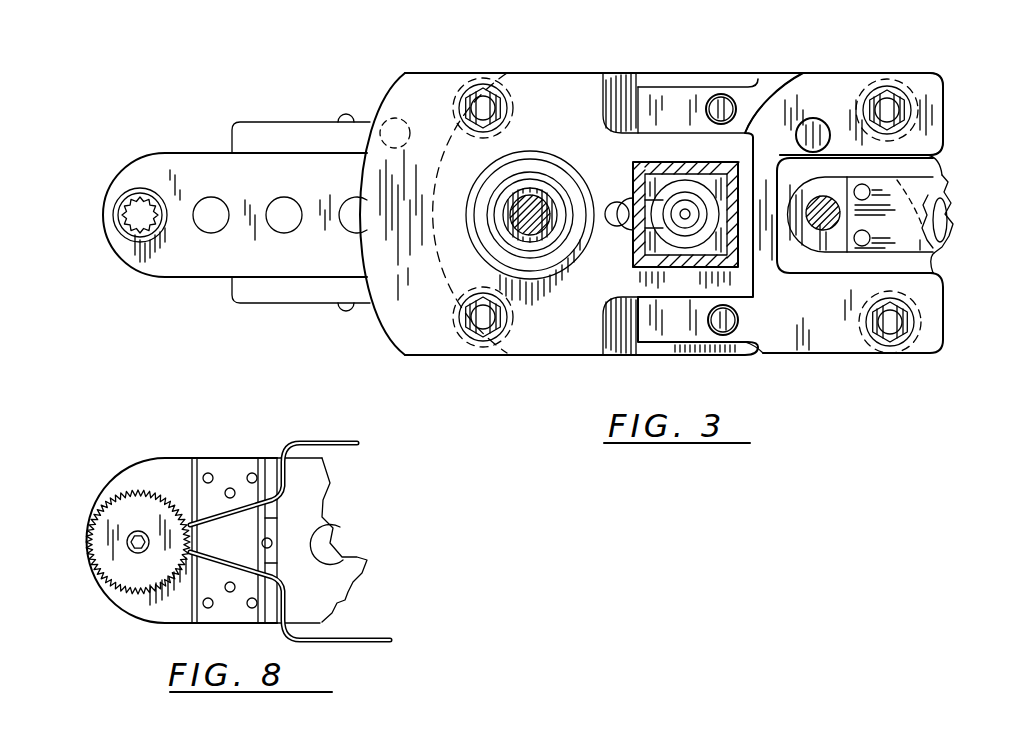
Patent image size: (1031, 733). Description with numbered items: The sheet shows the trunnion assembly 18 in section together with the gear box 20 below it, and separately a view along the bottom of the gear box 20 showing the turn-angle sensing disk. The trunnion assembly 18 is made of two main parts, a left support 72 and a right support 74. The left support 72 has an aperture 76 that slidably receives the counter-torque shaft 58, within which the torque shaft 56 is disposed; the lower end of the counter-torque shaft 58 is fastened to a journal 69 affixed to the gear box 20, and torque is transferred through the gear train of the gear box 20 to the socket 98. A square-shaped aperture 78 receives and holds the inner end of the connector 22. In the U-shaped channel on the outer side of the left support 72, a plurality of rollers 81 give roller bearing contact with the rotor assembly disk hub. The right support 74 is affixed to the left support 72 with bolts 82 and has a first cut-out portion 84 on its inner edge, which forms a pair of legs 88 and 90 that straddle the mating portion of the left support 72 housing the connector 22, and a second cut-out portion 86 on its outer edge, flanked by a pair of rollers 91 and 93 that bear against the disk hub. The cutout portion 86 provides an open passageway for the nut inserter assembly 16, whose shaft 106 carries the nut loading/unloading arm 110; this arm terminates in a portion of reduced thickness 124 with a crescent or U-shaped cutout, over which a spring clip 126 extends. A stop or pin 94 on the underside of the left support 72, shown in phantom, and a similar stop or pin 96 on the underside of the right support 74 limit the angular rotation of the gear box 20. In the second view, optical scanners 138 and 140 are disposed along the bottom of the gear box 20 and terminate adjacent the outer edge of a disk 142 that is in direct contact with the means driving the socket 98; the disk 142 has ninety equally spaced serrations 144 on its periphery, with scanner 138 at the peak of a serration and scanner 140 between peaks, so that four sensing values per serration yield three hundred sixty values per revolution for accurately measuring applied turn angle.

In FIG. 3, the nut inserter assembly 16 is at (945, 176).
In FIG. 3, the trunnion assembly 18 is at (948, 102).
In FIG. 3, the gear box 20 is at (268, 186).
In FIG. 8, the gear box 20 is at (177, 455).
In FIG. 3, the connector 22 is at (672, 268).
In FIG. 3, the torque shaft 56 is at (552, 210).
In FIG. 3, the counter-torque shaft 58 is at (550, 200).
In FIG. 3, the journal 69 is at (548, 247).
In FIG. 3, the left support 72 is at (610, 289).
In FIG. 3, the right support 74 is at (821, 307).
In FIG. 3, the aperture 76 is at (530, 195).
In FIG. 3, the square-shaped aperture 78 is at (690, 170).
In FIG. 3, the rollers 81 is at (506, 80).
In FIG. 3, the bolts 82 is at (710, 98).
In FIG. 3, the first cut-out portion 84 is at (806, 70).
In FIG. 3, the second cut-out portion 86 is at (937, 158).
In FIG. 3, the leg 88 is at (688, 92).
In FIG. 3, the leg 90 is at (684, 343).
In FIG. 3, the roller 91 is at (912, 86).
In FIG. 3, the roller 93 is at (913, 347).
In FIG. 3, the stop or pin 94 is at (385, 113).
In FIG. 3, the stop or pin 96 is at (825, 120).
In FIG. 3, the socket 98 is at (142, 193).
In FIG. 3, the shaft 106 is at (808, 245).
In FIG. 3, the nut loading/unloading arm 110 is at (827, 178).
In FIG. 3, the portion of reduced thickness 124 is at (948, 216).
In FIG. 3, the spring clip 126 is at (927, 251).
In FIG. 8, the optical scanner 138 is at (378, 638).
In FIG. 8, the optical scanner 140 is at (350, 447).
In FIG. 8, the disk 142 is at (92, 555).
In FIG. 8, the serrations 144 is at (112, 588).